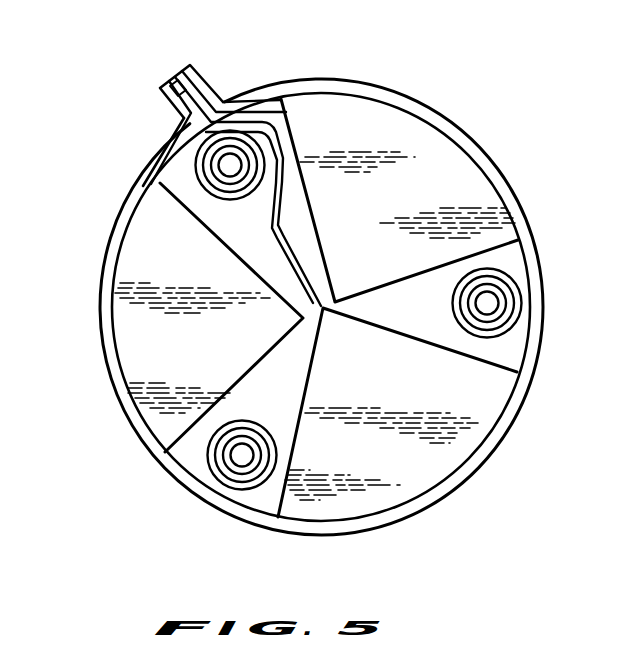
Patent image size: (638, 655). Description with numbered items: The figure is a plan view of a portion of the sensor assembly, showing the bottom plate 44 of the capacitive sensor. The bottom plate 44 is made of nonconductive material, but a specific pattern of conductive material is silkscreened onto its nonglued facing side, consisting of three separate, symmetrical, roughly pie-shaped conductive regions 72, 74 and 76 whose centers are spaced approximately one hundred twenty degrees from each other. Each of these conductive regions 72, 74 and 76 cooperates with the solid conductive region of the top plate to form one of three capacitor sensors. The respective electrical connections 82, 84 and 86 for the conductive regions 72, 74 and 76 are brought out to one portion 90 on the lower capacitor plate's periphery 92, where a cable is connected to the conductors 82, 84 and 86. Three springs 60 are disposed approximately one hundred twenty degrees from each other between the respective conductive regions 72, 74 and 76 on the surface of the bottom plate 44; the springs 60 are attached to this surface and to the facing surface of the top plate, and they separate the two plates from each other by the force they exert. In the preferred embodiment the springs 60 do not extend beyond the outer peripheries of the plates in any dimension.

The bottom plate 44 is at (423, 508).
The springs 60 is at (202, 164).
The conductive region 72 is at (135, 297).
The conductive region 74 is at (455, 180).
The conductive region 76 is at (483, 398).
The electrical connection 82 is at (163, 100).
The electrical connection 84 is at (208, 87).
The electrical connection 86 is at (181, 80).
The portion 90 is at (196, 73).
The periphery 92 is at (260, 90).